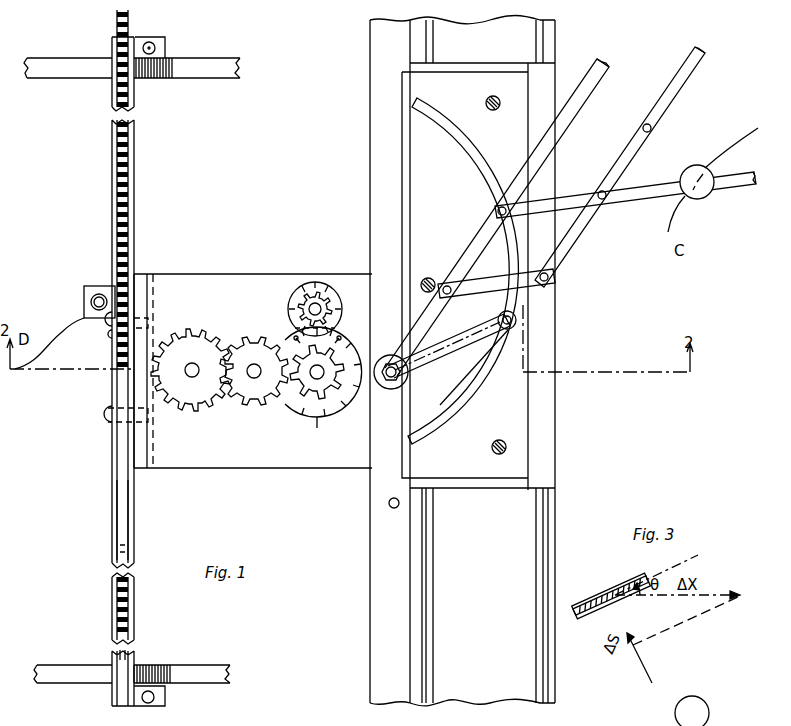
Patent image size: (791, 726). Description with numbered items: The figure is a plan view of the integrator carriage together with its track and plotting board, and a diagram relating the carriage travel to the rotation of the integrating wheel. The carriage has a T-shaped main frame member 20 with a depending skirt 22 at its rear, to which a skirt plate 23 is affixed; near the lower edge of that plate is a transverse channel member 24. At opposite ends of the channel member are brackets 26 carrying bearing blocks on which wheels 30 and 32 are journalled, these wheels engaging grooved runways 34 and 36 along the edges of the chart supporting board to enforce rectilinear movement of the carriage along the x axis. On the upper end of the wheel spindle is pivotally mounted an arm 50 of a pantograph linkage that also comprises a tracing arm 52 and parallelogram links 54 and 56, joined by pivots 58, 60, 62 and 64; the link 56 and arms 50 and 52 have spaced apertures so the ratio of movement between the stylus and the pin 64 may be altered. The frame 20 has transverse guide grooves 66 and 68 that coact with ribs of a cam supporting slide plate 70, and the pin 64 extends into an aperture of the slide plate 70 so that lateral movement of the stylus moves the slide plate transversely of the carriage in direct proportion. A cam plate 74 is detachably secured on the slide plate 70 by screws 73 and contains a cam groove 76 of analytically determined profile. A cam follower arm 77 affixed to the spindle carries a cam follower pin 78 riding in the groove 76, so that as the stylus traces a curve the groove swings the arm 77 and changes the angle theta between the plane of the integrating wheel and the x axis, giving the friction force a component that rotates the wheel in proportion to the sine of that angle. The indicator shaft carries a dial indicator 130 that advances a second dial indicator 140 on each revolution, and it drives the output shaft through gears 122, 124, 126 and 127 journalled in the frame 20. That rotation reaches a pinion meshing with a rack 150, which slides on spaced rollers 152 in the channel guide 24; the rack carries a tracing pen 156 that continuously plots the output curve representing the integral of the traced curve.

The main frame member 20 is at (206, 274).
The depending skirt 22 is at (160, 282).
The skirt plate 23 is at (140, 275).
The transverse channel member 24 is at (122, 708).
The brackets 26 is at (162, 40).
The wheel 30 is at (164, 664).
The wheel 32 is at (168, 78).
The grooved runway 34 is at (230, 674).
The grooved runway 36 is at (242, 68).
The arm 50 is at (586, 103).
The tracing arm 52 is at (640, 186).
The parallelogram link 54 is at (476, 290).
The parallelogram link 56 is at (672, 102).
The pivot 58 is at (447, 284).
The pivot 60 is at (497, 212).
The pivot 62 is at (606, 198).
The pivot pin 64 is at (556, 275).
The transverse guide groove 66 is at (540, 558).
The transverse guide groove 68 is at (433, 571).
The cam supporting slide plate 70 is at (478, 488).
The screws 73 is at (493, 96).
The cam plate 74 is at (400, 456).
The cam groove 76 is at (442, 138).
The cam follower arm 77 is at (465, 332).
The cam follower pin 78 is at (508, 340).
The gear 122 is at (340, 396).
The gear 124 is at (264, 402).
The gear 126 is at (250, 396).
The gear 127 is at (198, 402).
The dial indicator 130 is at (338, 342).
The second dial indicator 140 is at (340, 303).
The rack 150 is at (134, 607).
The rollers 152 is at (118, 480).
The tracing pen 156 is at (84, 304).